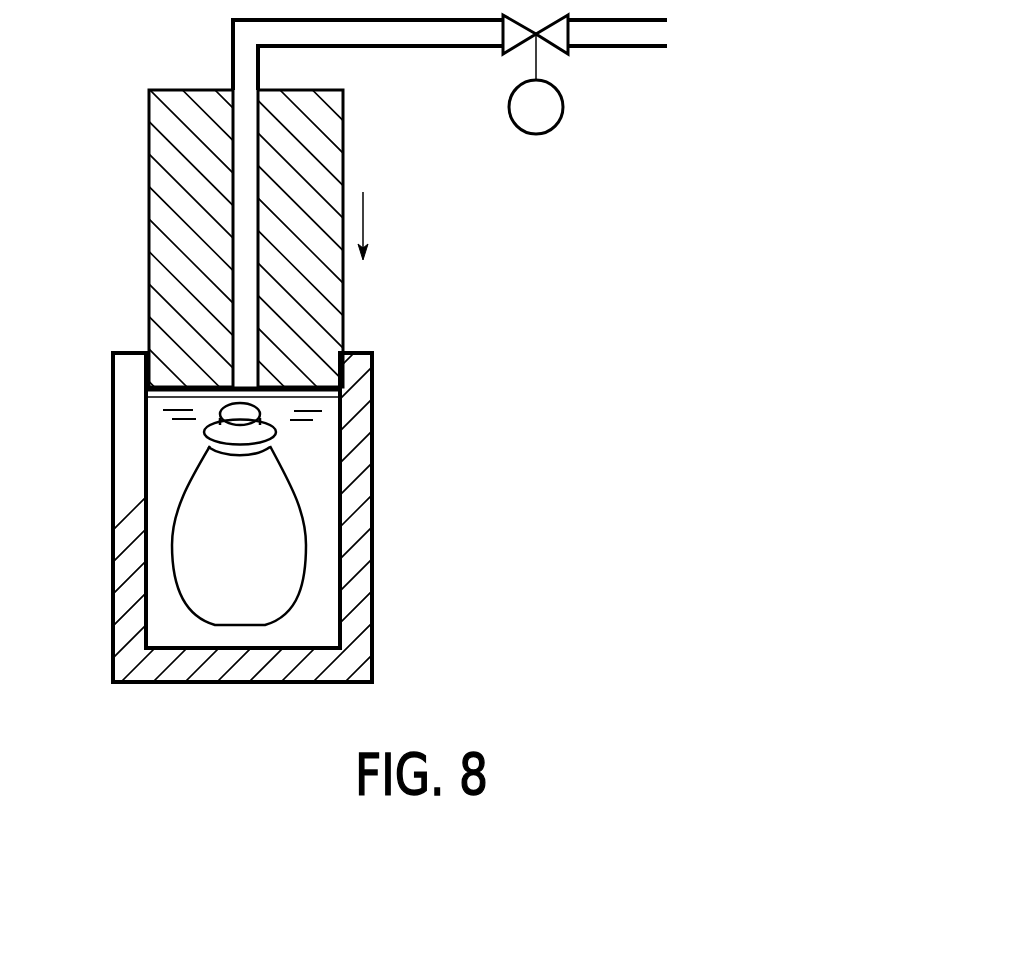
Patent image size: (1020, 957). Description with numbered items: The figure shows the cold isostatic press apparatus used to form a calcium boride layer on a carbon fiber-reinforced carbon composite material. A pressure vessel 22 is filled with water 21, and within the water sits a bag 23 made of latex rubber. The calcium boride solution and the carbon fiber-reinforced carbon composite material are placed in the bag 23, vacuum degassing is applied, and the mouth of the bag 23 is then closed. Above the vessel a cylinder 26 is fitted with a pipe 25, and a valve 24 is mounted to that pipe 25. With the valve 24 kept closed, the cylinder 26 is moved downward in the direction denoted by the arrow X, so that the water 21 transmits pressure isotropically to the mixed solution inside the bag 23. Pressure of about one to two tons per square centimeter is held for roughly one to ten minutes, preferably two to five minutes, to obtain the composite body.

The water 21 is at (328, 449).
The pressure vessel 22 is at (358, 648).
The bag 23 is at (304, 562).
The valve 24 is at (549, 56).
The pipe 25 is at (423, 50).
The cylinder 26 is at (328, 293).
The arrow X is at (365, 218).